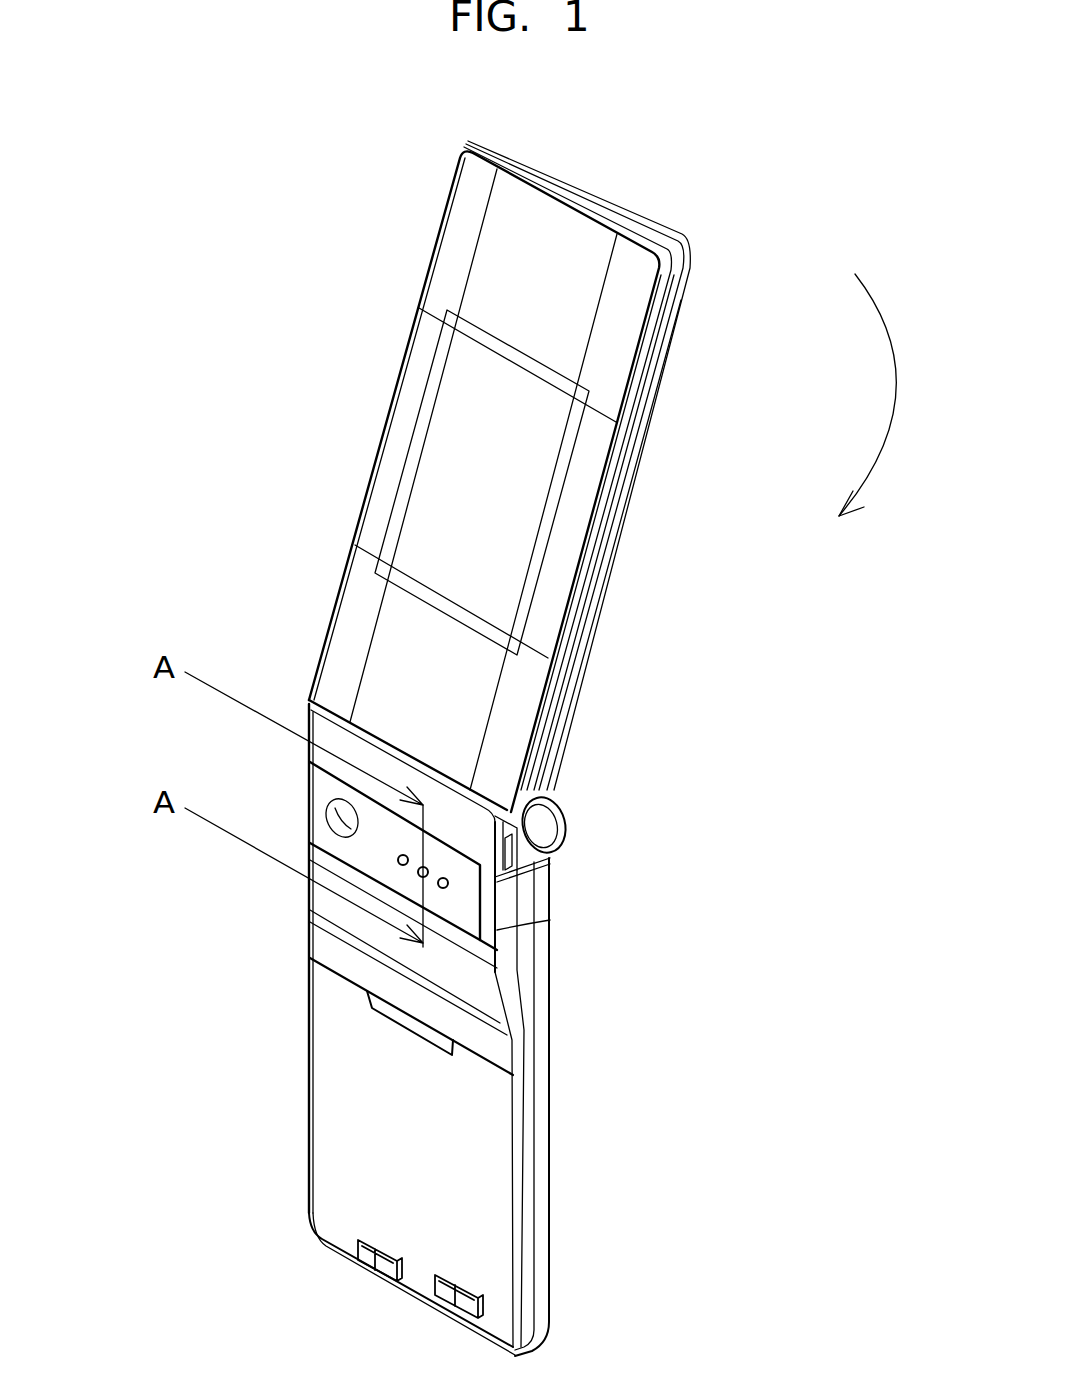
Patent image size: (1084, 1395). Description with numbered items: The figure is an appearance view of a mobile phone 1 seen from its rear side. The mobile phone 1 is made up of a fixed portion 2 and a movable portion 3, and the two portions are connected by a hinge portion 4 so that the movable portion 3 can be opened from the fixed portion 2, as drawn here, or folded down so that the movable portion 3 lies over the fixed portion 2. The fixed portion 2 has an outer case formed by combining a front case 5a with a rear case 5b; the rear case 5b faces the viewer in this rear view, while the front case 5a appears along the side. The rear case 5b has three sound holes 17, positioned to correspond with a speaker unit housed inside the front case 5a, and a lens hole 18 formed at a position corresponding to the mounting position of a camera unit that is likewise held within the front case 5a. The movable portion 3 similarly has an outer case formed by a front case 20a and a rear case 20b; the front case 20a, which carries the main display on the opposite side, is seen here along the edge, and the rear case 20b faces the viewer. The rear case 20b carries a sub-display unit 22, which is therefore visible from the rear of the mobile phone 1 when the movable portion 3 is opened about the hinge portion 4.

The mobile phone 1 is at (168, 1327).
The fixed portion 2 is at (547, 1289).
The movable portion 3 is at (583, 660).
The hinge portion 4 is at (552, 822).
The front case 5a is at (549, 1188).
The rear case 5b is at (310, 1094).
The sound holes 17 is at (402, 858).
The lens hole 18 is at (337, 801).
The front case 20a is at (630, 512).
The rear case 20b is at (383, 490).
The sub-display unit 22 is at (458, 437).